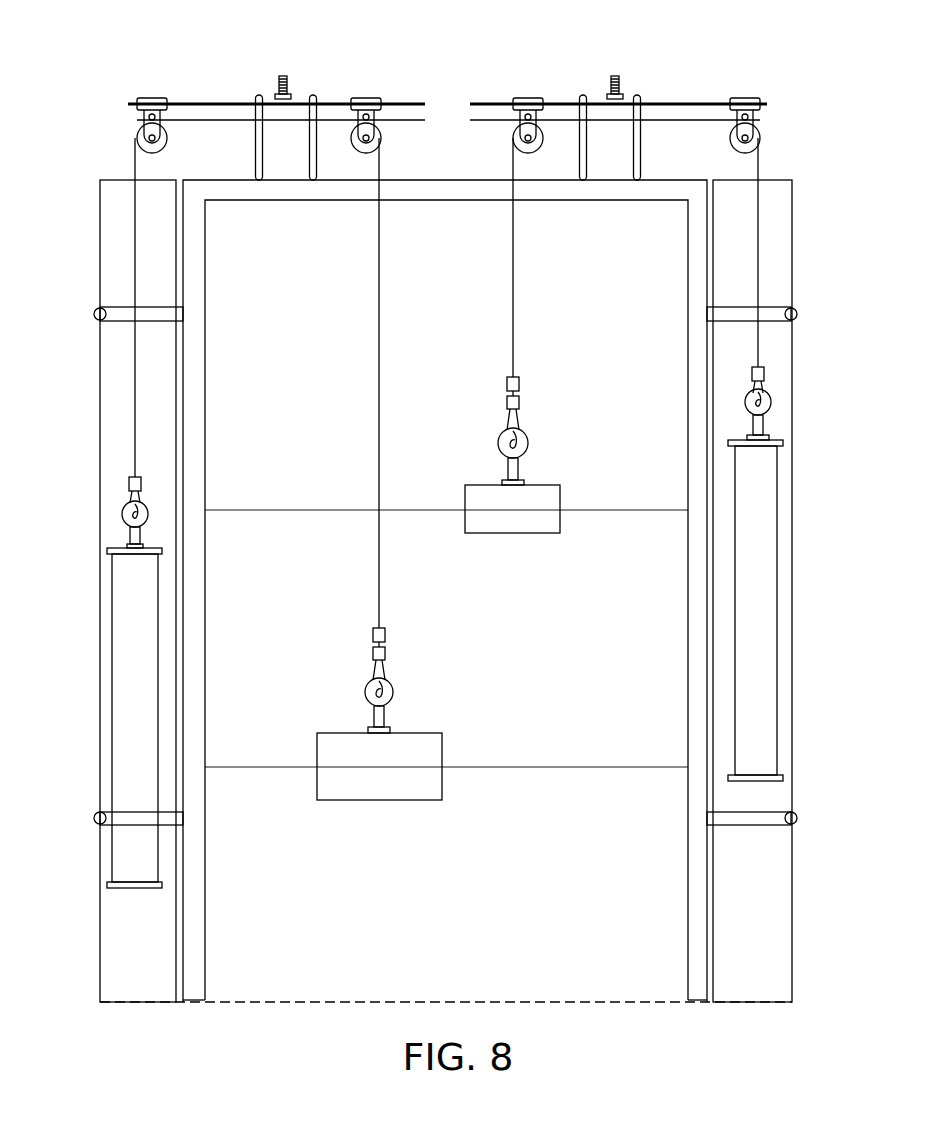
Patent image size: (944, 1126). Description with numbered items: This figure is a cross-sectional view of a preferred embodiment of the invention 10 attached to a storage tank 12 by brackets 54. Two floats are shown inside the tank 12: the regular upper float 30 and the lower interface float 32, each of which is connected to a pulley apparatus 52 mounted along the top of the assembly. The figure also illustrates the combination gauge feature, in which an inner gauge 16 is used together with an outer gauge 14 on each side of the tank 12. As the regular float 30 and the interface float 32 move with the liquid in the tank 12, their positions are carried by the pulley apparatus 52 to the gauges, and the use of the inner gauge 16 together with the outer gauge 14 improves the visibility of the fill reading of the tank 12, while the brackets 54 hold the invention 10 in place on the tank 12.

The invention 10 is at (184, 50).
The storage tank 12 is at (690, 265).
The outer gauge 14 is at (100, 437).
The inner gauge 16 is at (123, 748).
The regular float 30 is at (520, 533).
The interface float 32 is at (393, 800).
The pulley apparatus 52 is at (600, 100).
The brackets 54 is at (804, 289).